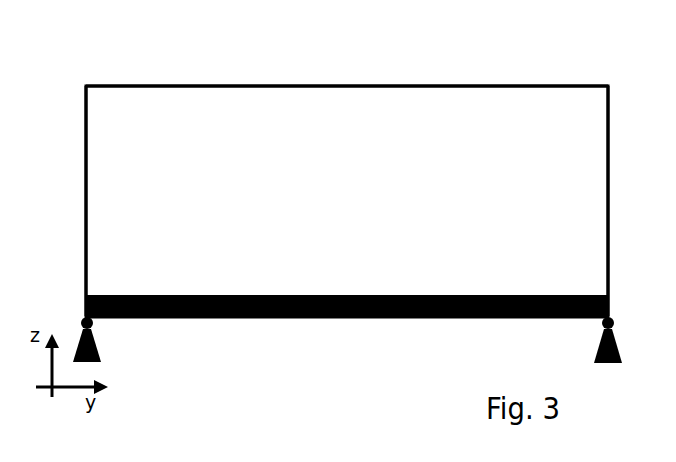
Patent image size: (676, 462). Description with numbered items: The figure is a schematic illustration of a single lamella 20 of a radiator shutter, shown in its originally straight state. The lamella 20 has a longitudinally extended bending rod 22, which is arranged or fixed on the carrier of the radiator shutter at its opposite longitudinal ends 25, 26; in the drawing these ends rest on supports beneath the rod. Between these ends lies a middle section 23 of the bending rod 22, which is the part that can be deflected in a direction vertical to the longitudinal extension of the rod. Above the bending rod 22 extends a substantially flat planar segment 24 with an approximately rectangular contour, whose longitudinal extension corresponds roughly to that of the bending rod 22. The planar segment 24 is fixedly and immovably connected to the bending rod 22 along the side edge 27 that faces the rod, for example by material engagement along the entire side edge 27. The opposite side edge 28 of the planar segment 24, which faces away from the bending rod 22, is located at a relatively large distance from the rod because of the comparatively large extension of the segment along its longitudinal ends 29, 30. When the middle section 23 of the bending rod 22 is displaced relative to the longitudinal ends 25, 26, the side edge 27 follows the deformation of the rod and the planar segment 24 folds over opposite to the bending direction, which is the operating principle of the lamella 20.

The lamella 20 is at (179, 79).
The bending rod 22 is at (231, 318).
The middle section 23 is at (323, 318).
The planar segment 24 is at (367, 110).
The longitudinal end 25 is at (85, 302).
The longitudinal end 26 is at (612, 304).
The side edge 27 is at (430, 295).
The side edge 28 is at (302, 86).
The longitudinal end 29 is at (85, 210).
The longitudinal end 30 is at (610, 125).